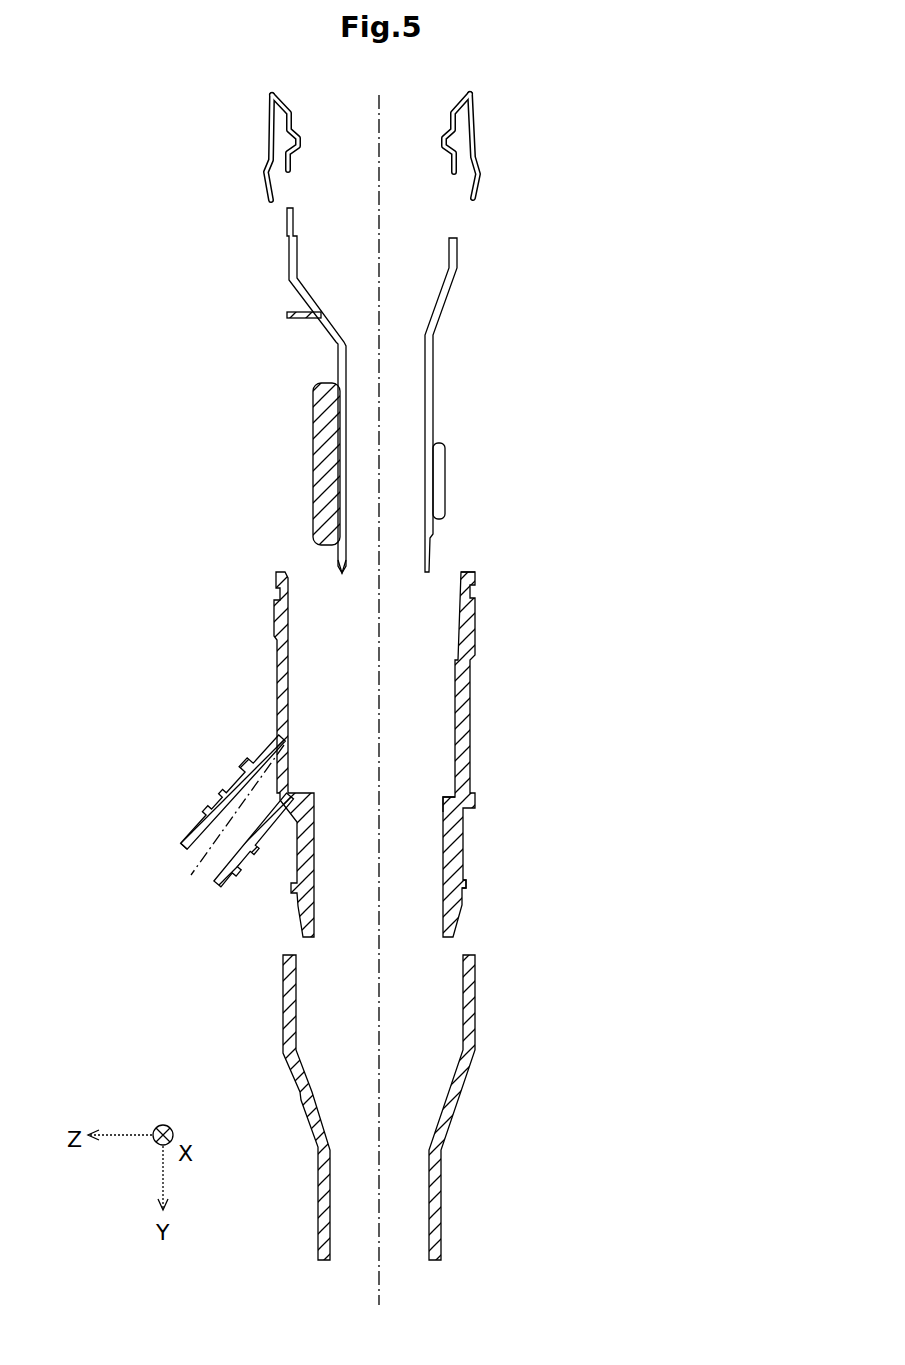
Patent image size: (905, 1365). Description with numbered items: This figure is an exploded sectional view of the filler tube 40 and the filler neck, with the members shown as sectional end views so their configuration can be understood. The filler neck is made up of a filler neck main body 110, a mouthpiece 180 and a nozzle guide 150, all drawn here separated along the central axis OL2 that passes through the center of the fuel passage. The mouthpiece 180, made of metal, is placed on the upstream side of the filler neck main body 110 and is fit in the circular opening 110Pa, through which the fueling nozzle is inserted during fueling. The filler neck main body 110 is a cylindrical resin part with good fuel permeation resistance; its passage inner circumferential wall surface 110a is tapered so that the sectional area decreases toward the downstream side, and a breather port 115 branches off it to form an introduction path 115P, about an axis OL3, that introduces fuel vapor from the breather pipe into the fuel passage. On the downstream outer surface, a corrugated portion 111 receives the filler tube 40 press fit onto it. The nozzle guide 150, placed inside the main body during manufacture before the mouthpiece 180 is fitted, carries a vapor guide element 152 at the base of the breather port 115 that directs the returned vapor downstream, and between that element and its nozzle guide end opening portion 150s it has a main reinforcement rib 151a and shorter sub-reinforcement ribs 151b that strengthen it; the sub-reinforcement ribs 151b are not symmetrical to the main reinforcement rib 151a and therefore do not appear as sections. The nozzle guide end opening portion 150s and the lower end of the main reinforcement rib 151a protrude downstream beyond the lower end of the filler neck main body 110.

The mouthpiece 180 is at (492, 140).
The nozzle guide 150 is at (480, 270).
The vapor guide element 152 is at (289, 314).
The main reinforcement rib 151a is at (313, 446).
The sub-reinforcement ribs 151b is at (437, 466).
The nozzle guide end opening portion 150s is at (337, 568).
The opening 110Pa is at (438, 586).
The filler neck main body 110 is at (499, 635).
The passage inner circumferential wall surface 110a is at (445, 812).
The corrugated portion 111 is at (463, 893).
The breather port 115 is at (211, 806).
The introduction path 115P is at (189, 853).
The axis OL3 is at (222, 826).
The axis OL2 is at (379, 685).
The filler tube 40 is at (488, 979).